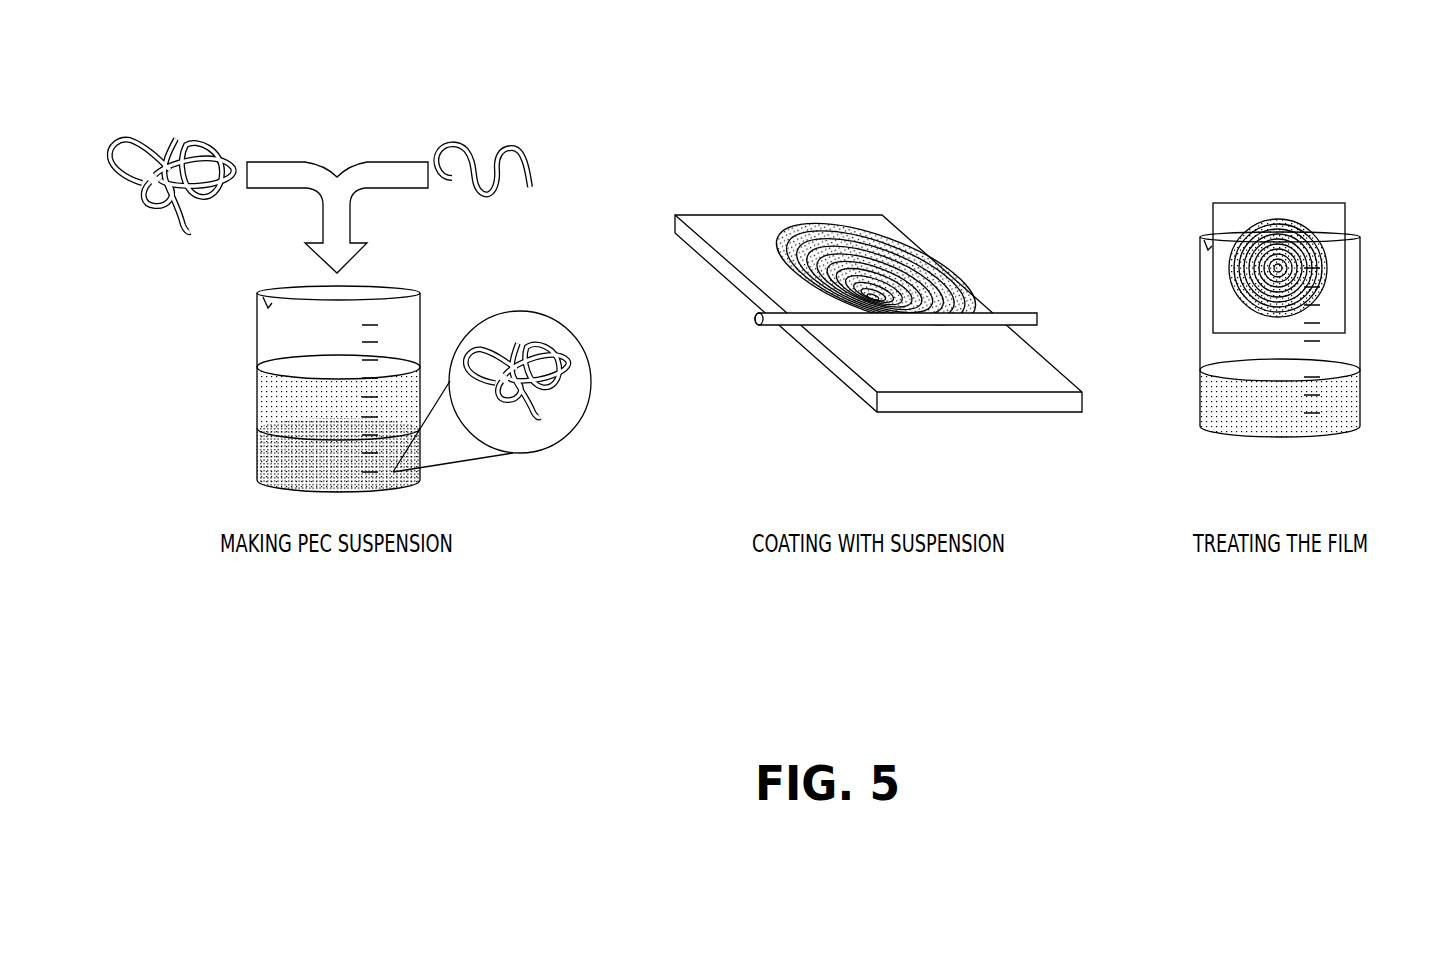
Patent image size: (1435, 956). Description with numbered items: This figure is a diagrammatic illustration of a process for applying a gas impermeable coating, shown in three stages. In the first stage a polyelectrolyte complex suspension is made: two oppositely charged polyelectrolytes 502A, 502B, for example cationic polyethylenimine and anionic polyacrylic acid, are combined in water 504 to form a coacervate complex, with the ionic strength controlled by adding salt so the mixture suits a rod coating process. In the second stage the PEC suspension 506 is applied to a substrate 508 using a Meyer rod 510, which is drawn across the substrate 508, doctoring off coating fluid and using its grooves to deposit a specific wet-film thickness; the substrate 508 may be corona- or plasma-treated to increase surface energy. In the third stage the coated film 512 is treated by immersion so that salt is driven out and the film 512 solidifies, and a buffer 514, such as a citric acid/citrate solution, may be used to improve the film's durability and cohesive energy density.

The polyelectrolyte 502A is at (190, 140).
The polyelectrolyte 502B is at (450, 142).
The water 504 is at (258, 393).
The PEC suspension 506 is at (948, 300).
The substrate 508 is at (882, 362).
The Meyer rod 510 is at (782, 317).
The film 512 is at (1300, 228).
The buffer 514 is at (1352, 407).